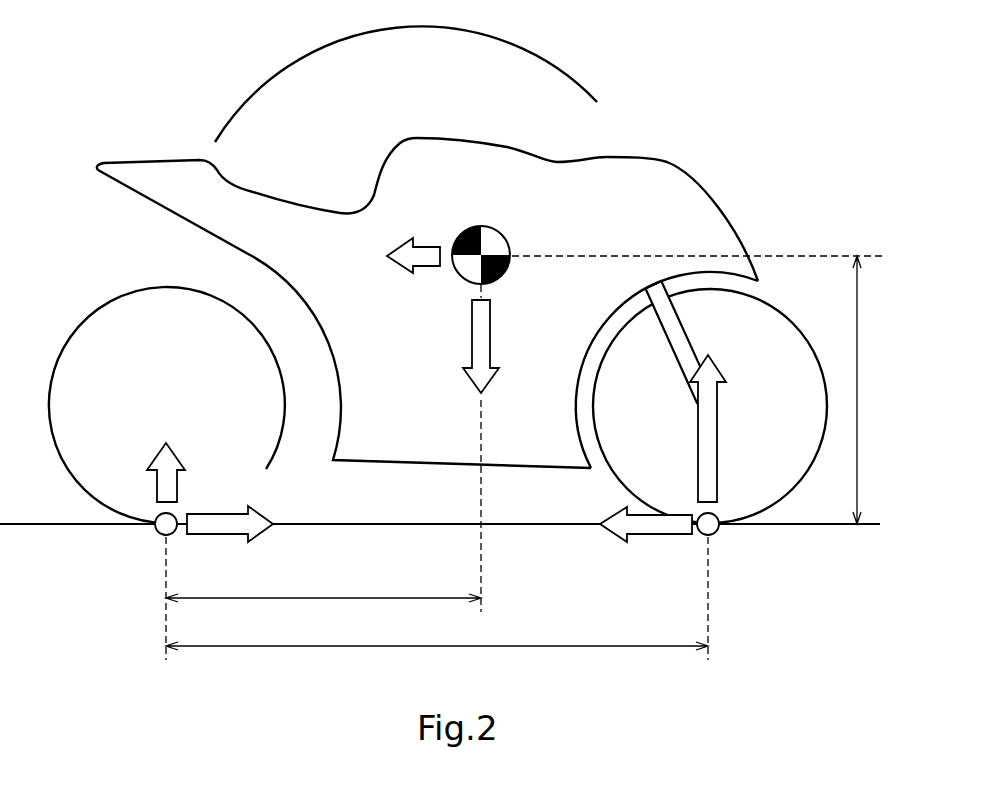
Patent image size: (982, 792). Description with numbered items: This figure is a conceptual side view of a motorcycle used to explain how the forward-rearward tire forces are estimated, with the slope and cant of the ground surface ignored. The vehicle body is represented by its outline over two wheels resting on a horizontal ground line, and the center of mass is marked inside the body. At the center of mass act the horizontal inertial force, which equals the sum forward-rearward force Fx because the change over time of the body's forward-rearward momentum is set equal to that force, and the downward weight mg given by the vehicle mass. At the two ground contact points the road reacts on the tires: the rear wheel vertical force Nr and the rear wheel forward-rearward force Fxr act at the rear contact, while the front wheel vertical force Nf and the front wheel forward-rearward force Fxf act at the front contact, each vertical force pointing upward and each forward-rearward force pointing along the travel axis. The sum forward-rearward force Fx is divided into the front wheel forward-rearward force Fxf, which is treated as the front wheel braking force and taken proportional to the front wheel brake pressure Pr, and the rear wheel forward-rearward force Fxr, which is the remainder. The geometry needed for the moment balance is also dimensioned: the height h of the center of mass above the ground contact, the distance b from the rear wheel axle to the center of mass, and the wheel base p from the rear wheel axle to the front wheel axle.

The sum forward-rearward force Fx is at (413, 291).
The gravitational force at center of gravity mg is at (507, 346).
The rear wheel vertical force Nr is at (176, 459).
The rear wheel forward-rearward force Fxr is at (215, 513).
The front wheel brake pressure Pr is at (150, 586).
The front wheel vertical force Nf is at (730, 428).
The front wheel forward-rearward force Fxf is at (659, 583).
The center of mass height h is at (867, 390).
The distance from rear wheel axle to center of mass b is at (323, 584).
The wheel base p is at (437, 632).